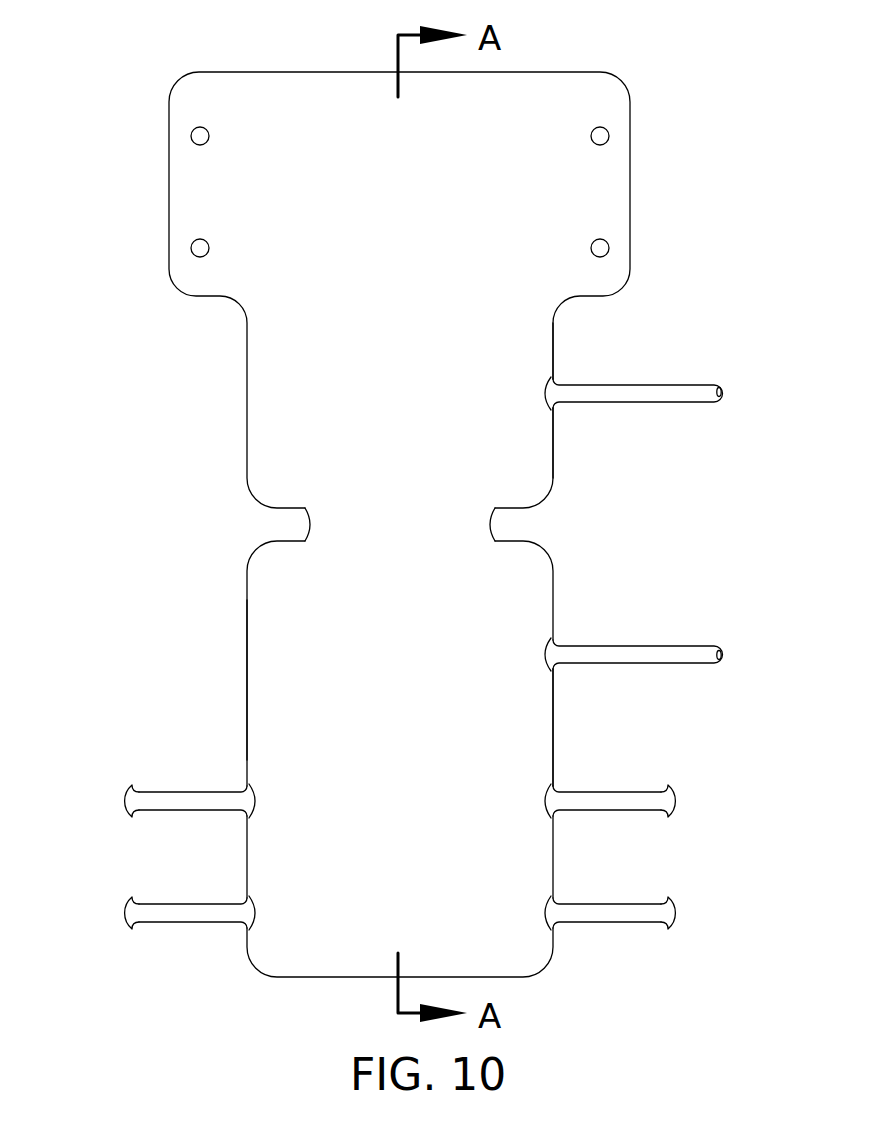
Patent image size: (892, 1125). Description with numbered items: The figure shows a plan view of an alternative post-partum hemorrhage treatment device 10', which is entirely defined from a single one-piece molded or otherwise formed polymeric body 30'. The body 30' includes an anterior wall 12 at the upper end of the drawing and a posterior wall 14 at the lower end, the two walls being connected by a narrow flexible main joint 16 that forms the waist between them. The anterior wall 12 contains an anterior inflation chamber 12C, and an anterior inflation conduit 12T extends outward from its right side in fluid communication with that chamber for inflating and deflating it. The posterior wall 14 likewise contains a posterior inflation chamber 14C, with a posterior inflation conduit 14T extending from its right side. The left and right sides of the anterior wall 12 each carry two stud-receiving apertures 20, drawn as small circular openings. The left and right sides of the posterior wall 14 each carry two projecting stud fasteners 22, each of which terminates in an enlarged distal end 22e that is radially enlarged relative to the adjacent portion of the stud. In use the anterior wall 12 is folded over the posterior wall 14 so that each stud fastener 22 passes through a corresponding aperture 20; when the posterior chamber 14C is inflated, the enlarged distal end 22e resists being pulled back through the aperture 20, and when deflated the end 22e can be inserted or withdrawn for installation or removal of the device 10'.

The post-partum hemorrhage treatment device 10' is at (410, 526).
The anterior wall 12 is at (518, 332).
The anterior inflation chamber 12C is at (498, 370).
The anterior inflation conduit 12T is at (650, 397).
The posterior wall 14 is at (525, 605).
The posterior inflation chamber 14C is at (502, 747).
The posterior inflation conduit 14T is at (652, 657).
The main joint 16 is at (486, 529).
The stud-receiving aperture 20 is at (191, 133).
The stud fastener 22 is at (610, 792).
The enlarged distal end 22e is at (695, 803).
The one-piece polymeric body 30' is at (226, 680).